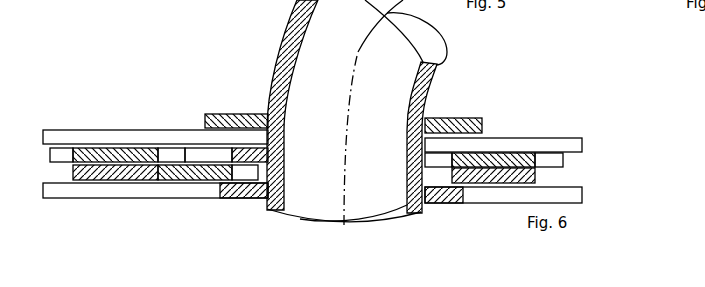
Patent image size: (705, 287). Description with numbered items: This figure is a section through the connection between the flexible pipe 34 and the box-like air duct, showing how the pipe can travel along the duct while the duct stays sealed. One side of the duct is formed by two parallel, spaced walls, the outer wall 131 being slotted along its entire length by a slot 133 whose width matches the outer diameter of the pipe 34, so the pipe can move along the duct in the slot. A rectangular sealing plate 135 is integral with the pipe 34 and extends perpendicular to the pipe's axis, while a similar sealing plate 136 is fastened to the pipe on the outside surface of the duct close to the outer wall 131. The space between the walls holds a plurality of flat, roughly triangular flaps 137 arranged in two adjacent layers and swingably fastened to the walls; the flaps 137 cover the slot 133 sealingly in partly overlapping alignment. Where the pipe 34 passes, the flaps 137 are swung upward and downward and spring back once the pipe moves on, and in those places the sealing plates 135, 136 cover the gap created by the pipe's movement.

The flexible pipe 34 is at (437, 73).
The outer wall 131 is at (572, 145).
The slot 133 is at (572, 195).
The sealing plate 135 is at (432, 195).
The sealing plate 136 is at (477, 120).
The flaps 137 is at (125, 166).